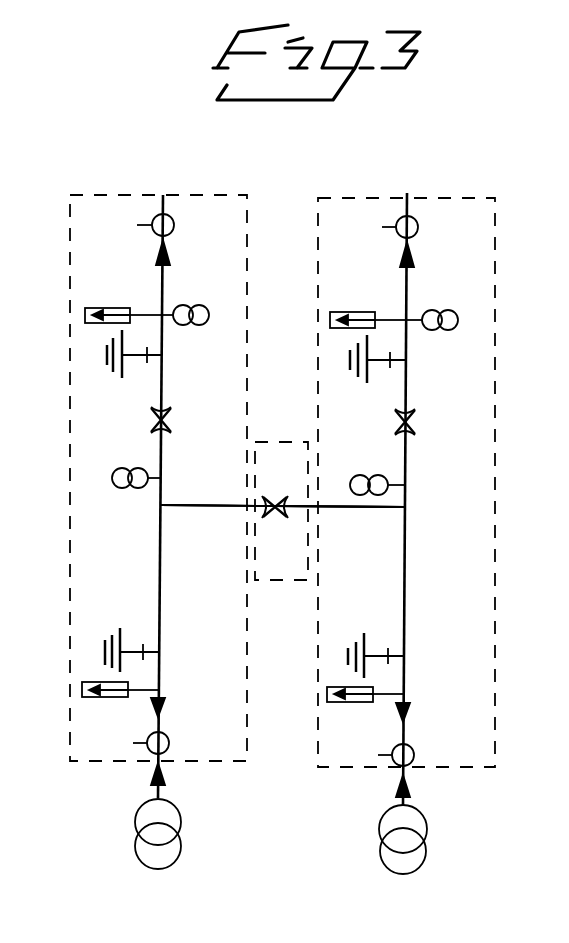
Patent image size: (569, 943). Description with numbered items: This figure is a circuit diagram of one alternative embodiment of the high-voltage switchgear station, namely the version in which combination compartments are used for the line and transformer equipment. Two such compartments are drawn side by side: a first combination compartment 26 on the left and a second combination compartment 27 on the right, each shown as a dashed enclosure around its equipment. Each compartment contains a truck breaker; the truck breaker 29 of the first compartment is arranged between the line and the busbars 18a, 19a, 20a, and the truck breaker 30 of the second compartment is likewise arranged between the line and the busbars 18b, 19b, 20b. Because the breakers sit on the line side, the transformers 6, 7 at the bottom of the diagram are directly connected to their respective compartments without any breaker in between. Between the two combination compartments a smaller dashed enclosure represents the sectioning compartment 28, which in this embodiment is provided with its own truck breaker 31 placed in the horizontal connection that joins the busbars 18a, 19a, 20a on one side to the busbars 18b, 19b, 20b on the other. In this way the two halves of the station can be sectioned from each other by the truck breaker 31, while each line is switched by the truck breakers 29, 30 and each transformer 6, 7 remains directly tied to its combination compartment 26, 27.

The transformer 6 is at (150, 855).
The transformer 7 is at (413, 858).
The busbar 18a is at (218, 506).
The busbar 19a is at (217, 552).
The busbar 20a is at (217, 565).
The busbar 18b is at (370, 510).
The busbar 19b is at (415, 526).
The busbar 20b is at (415, 542).
The combination compartment 26 is at (102, 207).
The combination compartment 27 is at (453, 207).
The sectioning compartment 28 is at (280, 440).
The truck breaker 29 is at (142, 425).
The truck breaker 30 is at (413, 427).
The truck breaker 31 is at (273, 515).